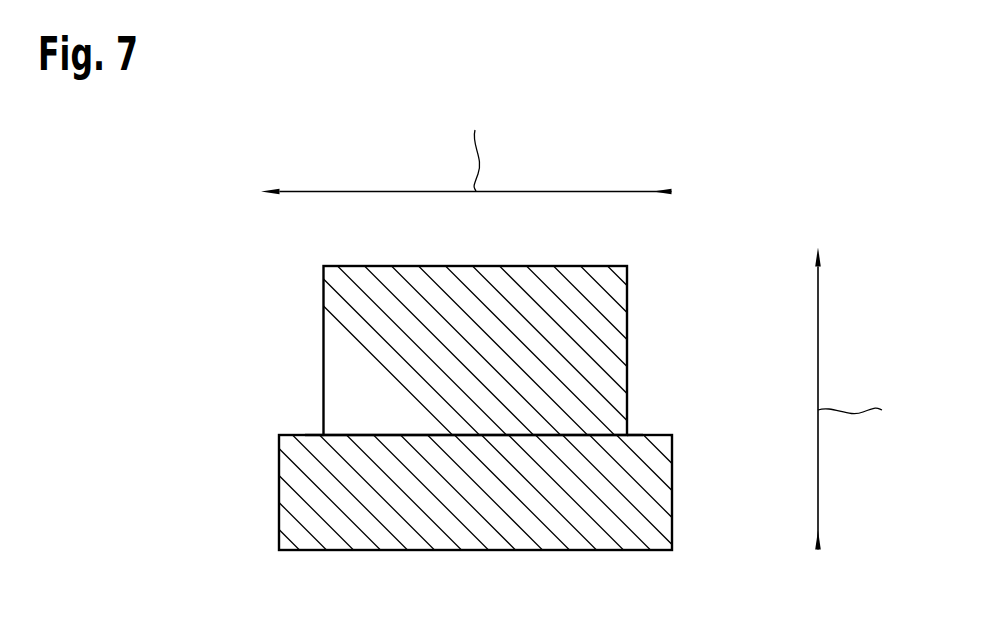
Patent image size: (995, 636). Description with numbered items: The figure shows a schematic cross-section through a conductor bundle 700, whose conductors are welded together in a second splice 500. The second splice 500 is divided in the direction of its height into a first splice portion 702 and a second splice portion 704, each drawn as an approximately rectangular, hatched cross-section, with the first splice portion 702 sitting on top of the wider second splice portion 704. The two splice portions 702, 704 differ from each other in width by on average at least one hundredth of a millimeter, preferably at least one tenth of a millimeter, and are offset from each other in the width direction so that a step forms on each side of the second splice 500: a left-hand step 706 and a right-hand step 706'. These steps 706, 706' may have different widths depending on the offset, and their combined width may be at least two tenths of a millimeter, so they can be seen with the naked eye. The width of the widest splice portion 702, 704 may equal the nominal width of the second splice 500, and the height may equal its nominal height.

The second splice 500 is at (738, 191).
The conductor bundle 700 is at (190, 281).
The first splice portion 702 is at (324, 348).
The second splice portion 704 is at (279, 490).
The left-hand step 706 is at (246, 419).
The right-hand step 706' is at (707, 416).